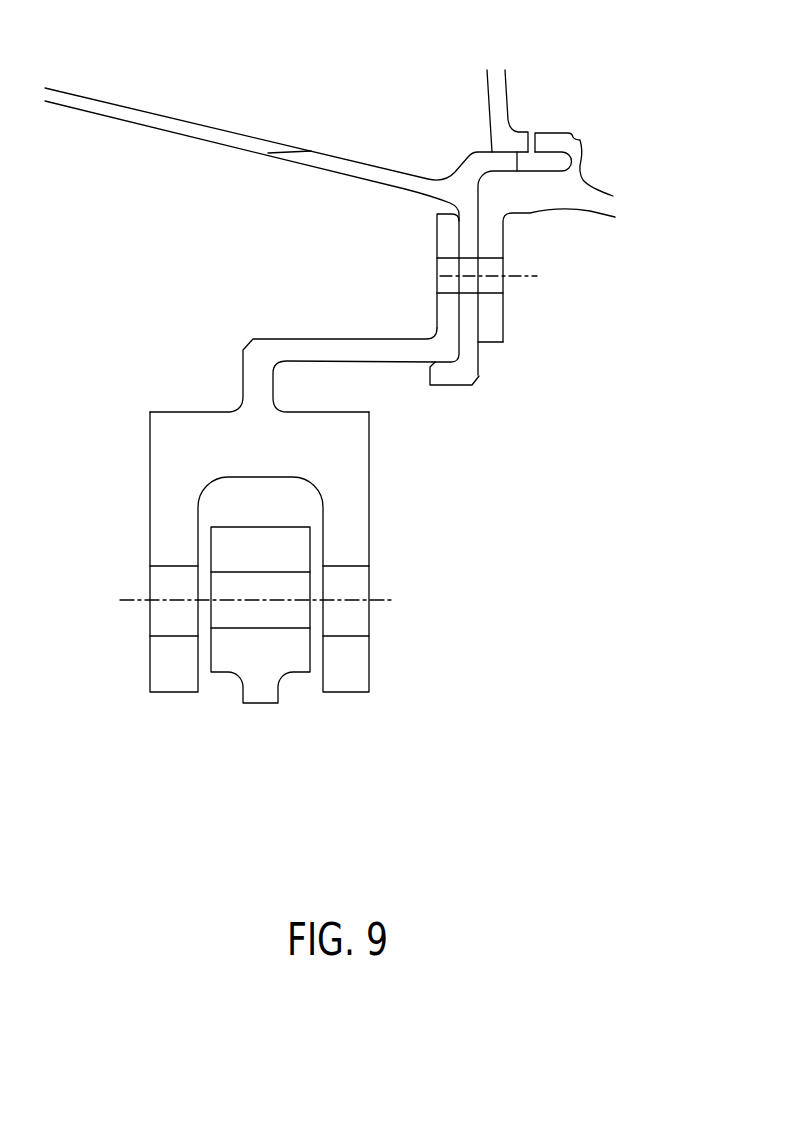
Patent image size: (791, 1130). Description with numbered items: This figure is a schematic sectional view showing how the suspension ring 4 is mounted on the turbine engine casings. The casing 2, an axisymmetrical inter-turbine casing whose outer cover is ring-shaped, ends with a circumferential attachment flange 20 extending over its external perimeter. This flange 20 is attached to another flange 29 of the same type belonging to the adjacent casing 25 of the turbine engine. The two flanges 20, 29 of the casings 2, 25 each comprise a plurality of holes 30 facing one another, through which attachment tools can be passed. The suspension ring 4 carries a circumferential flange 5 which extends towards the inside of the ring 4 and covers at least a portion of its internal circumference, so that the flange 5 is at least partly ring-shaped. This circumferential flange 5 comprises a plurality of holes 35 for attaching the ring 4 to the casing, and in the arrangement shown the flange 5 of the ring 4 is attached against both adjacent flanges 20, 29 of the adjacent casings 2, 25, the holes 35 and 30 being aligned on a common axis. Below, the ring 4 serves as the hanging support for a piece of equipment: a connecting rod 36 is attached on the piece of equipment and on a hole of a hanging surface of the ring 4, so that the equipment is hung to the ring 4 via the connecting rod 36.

The casing 2 is at (216, 112).
The suspension ring 4 is at (131, 506).
The circumferential flange 5 is at (420, 236).
The attachment flange 20 is at (500, 374).
The adjacent casing 25 is at (607, 176).
The flange 29 is at (520, 249).
The holes 30 is at (521, 291).
The holes 35 is at (421, 281).
The connecting rod 36 is at (286, 680).